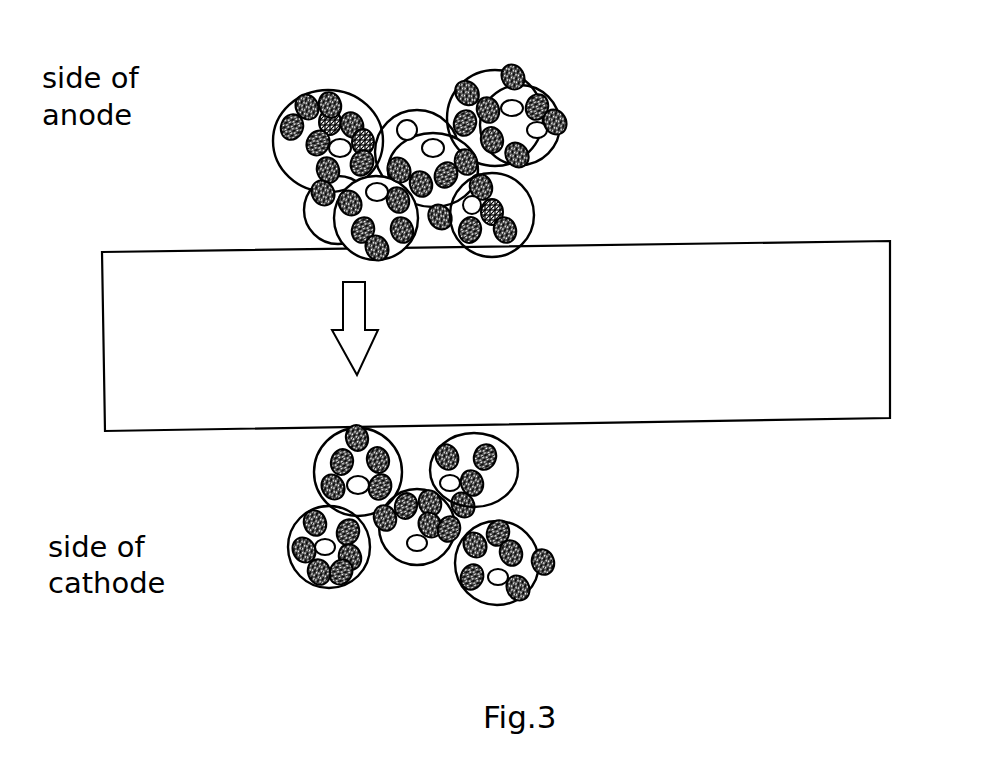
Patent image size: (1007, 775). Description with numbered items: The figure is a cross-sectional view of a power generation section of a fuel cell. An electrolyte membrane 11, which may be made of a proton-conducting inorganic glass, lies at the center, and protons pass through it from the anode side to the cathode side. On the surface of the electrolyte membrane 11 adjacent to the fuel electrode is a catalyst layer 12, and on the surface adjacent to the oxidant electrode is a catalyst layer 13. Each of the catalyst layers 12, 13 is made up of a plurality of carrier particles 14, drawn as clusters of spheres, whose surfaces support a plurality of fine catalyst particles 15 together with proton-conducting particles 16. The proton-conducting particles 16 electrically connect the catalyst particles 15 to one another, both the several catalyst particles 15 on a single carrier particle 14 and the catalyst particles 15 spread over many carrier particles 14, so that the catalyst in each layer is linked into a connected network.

The electrolyte membrane 11 is at (798, 250).
The catalyst layer 12 is at (580, 90).
The catalyst layer 13 is at (548, 507).
The carrier particle 14 is at (533, 212).
The catalyst particle 15 is at (435, 128).
The proton-conducting particle 16 is at (323, 90).